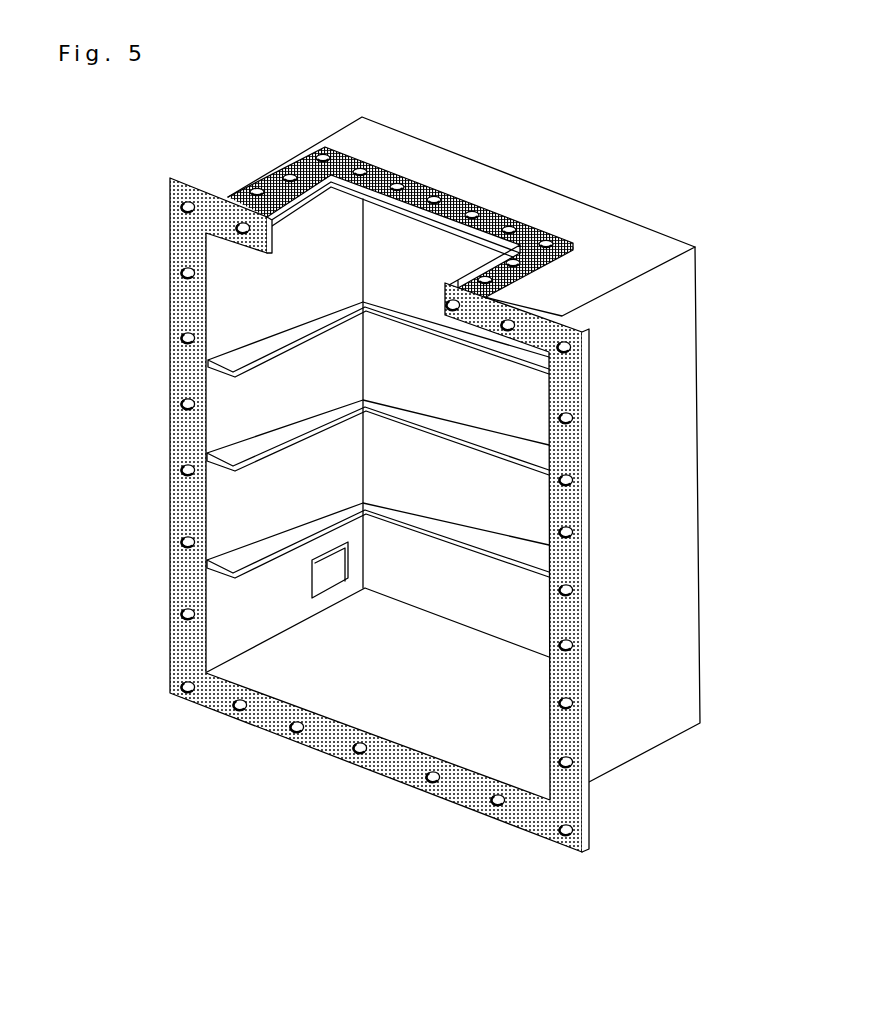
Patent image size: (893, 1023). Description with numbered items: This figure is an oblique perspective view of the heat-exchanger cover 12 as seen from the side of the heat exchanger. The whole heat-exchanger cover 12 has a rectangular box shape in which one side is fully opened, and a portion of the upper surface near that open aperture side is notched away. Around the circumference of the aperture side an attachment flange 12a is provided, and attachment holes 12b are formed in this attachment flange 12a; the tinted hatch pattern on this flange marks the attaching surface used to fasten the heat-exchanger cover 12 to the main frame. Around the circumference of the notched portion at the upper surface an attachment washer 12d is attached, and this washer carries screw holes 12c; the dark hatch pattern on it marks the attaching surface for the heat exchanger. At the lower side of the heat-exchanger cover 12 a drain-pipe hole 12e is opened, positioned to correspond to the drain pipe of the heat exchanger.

The heat-exchanger cover 12 is at (687, 213).
The attachment flange 12a is at (190, 307).
The attachment holes 12b is at (190, 413).
The screw holes 12c is at (437, 190).
The attachment washer 12d is at (525, 232).
The drain-pipe hole 12e is at (322, 575).